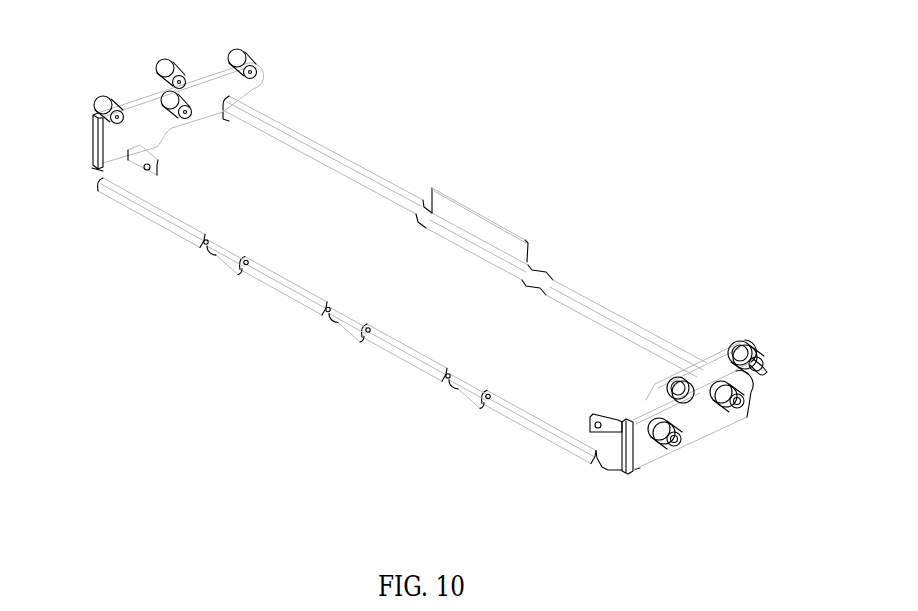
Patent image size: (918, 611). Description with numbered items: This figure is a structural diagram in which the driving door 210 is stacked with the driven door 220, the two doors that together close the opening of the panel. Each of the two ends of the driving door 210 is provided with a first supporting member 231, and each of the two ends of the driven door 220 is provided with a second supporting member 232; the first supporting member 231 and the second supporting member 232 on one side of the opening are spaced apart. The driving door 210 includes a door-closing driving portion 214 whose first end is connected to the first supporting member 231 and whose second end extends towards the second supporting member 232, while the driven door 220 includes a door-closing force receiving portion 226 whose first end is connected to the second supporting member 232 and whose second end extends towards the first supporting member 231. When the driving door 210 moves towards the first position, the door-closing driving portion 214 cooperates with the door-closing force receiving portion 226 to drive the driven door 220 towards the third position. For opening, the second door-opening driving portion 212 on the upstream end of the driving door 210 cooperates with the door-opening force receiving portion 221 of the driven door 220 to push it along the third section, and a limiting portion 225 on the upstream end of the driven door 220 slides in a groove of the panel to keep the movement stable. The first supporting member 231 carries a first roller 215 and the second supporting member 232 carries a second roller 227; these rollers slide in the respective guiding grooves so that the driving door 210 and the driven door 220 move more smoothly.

The driving door 210 is at (611, 473).
The second door-opening driving portion 212 is at (490, 233).
The door-closing driving portion 214 is at (93, 143).
The first roller 215 is at (100, 102).
The driven door 220 is at (608, 343).
The door-opening force receiving portion 221 is at (373, 175).
The limiting portion 225 is at (223, 260).
The door-closing force receiving portion 226 is at (227, 56).
The second roller 227 is at (253, 54).
The first supporting member 231 is at (700, 422).
The second supporting member 232 is at (708, 367).